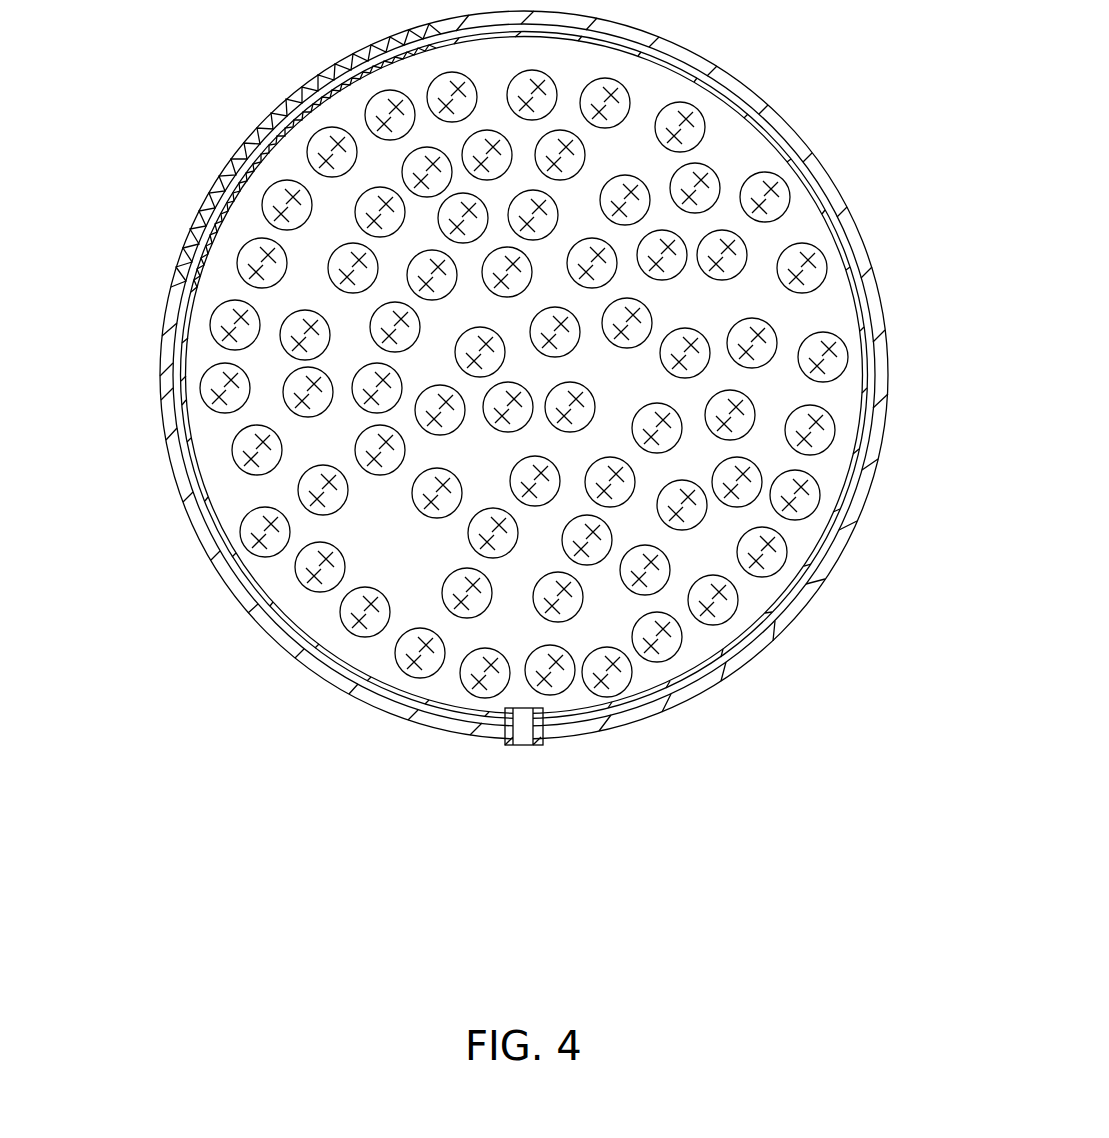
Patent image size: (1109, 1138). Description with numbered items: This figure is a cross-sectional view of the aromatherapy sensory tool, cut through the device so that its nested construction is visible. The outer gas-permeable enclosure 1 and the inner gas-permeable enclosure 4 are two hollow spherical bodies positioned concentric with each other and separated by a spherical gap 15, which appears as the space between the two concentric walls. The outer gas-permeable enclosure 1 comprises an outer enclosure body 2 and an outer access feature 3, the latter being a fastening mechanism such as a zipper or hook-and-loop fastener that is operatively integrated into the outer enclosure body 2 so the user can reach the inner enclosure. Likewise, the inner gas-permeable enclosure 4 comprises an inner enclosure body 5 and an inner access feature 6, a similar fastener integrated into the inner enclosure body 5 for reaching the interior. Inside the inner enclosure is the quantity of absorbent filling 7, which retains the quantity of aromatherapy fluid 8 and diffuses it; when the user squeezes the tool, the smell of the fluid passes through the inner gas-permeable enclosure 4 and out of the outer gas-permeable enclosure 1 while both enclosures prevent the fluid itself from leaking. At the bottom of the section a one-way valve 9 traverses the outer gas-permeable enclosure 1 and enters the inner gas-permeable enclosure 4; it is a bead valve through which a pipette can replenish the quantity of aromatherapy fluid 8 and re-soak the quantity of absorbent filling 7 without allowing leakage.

The outer gas-permeable enclosure 1 is at (480, 375).
The outer enclosure body 2 is at (177, 482).
The outer access feature 3 is at (258, 123).
The inner gas-permeable enclosure 4 is at (582, 367).
The inner enclosure body 5 is at (866, 377).
The inner access feature 6 is at (352, 62).
The quantity of absorbent filling 7 is at (413, 490).
The quantity of aromatherapy fluid 8 is at (447, 478).
The one-way valve 9 is at (525, 744).
The spherical gap 15 is at (697, 63).